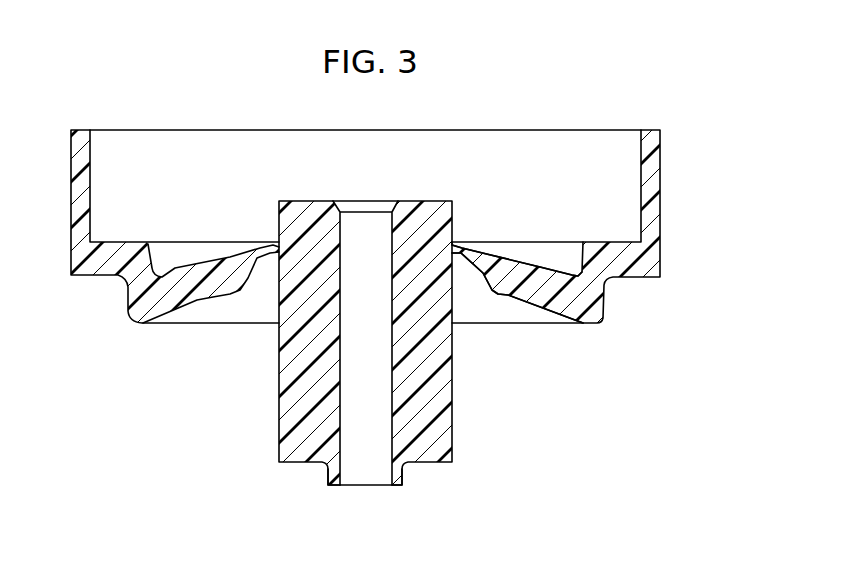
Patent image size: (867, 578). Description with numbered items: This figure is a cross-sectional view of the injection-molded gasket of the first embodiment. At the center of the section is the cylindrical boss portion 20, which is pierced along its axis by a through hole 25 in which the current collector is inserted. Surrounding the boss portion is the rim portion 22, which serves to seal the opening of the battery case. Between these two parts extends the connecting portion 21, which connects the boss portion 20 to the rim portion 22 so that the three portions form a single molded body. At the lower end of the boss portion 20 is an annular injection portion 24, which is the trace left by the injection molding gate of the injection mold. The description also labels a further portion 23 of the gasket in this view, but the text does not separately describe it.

The boss portion 20 is at (375, 319).
The connecting portion 21 is at (531, 268).
The rim portion 22 is at (660, 148).
The left inclined connecting portion 23 is at (275, 248).
The injection portion 24 is at (402, 480).
The through hole 25 is at (363, 471).